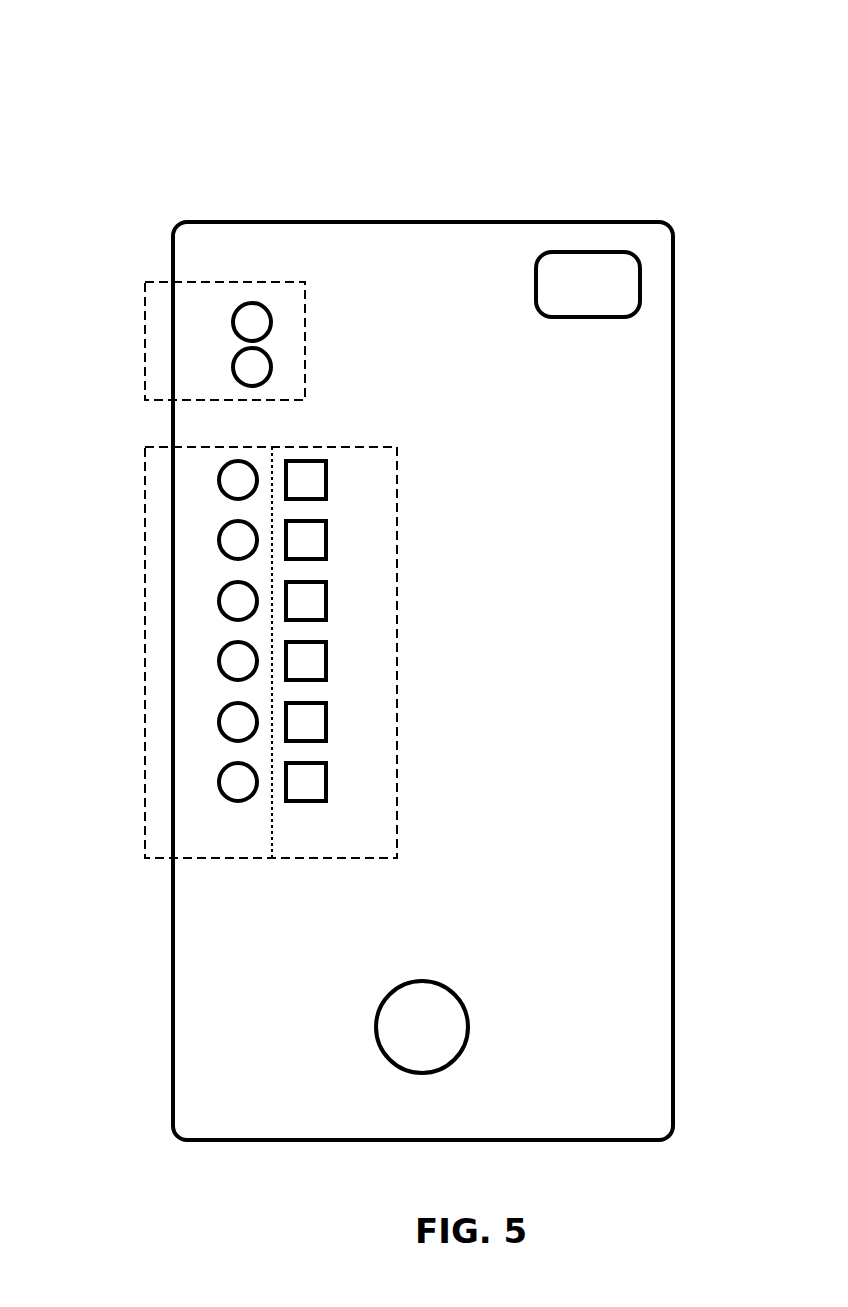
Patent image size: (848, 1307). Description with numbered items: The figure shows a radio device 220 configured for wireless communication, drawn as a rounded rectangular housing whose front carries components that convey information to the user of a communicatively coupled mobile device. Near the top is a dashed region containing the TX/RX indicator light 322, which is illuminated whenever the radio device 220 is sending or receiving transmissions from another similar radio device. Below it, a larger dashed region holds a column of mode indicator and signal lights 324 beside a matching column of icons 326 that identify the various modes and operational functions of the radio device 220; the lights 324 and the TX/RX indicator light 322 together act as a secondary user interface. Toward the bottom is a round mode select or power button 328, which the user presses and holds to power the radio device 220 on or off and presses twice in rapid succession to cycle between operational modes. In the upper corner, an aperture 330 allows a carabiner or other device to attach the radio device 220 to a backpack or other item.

The radio device 220 is at (138, 98).
The TX/RX indicator light 322 is at (145, 350).
The mode indicator and signal lights 324 is at (145, 618).
The icons 326 is at (397, 608).
The mode select or power button 328 is at (403, 980).
The aperture 330 is at (640, 282).